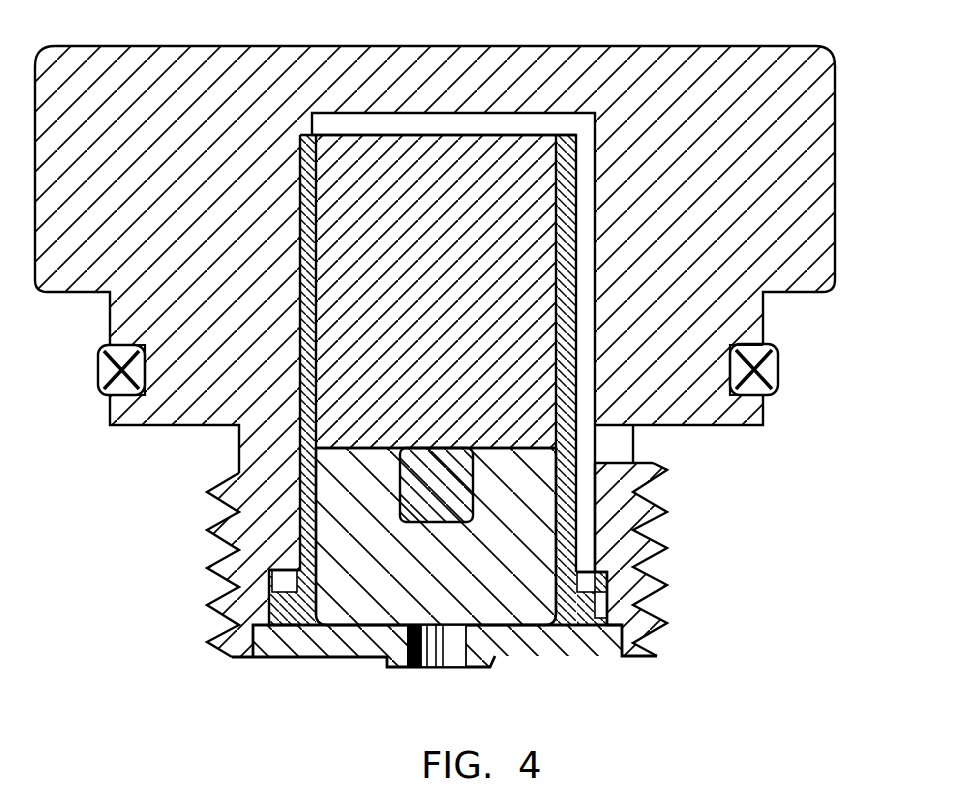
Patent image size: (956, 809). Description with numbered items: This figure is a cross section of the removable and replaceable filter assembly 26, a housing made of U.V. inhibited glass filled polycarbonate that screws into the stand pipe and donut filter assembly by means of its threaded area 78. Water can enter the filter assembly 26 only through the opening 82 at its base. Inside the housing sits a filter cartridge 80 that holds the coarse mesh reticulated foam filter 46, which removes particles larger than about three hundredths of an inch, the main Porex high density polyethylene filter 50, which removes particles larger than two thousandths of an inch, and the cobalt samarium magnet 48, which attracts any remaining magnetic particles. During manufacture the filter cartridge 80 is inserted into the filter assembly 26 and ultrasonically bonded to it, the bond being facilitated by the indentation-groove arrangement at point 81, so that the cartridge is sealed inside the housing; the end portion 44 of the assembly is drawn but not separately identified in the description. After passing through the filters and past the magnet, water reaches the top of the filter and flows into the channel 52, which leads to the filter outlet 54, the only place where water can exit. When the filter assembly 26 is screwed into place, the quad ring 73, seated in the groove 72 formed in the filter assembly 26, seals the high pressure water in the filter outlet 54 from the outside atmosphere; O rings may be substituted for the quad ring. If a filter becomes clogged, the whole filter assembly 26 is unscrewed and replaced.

The filter assembly 26 is at (236, 48).
The channel 52 is at (458, 126).
The quad ring 73 is at (104, 367).
The groove 72 is at (110, 396).
The filter 50 is at (262, 428).
The magnet 48 is at (302, 449).
The filter 46 is at (367, 532).
The filter outlet 54 is at (620, 442).
The threaded area 78 is at (214, 650).
The indentation-groove arrangement 81 is at (640, 603).
The filter cartridge 80 is at (283, 640).
The end cap 44 is at (378, 608).
The opening 82 is at (427, 668).